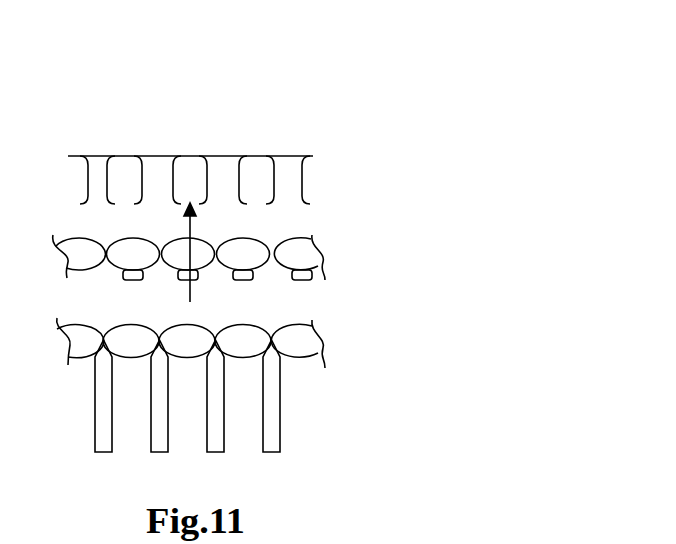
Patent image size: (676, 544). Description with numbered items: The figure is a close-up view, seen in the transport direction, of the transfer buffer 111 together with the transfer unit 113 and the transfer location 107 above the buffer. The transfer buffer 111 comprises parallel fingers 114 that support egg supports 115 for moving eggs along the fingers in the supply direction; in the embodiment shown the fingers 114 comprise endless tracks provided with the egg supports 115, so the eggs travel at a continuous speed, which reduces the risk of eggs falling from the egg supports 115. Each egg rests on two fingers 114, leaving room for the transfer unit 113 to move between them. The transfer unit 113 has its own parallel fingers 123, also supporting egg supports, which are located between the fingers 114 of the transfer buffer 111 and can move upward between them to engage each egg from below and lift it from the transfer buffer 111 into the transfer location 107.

The transfer location 107 is at (313, 218).
The transfer unit 113 is at (342, 271).
The fingers of the transfer unit 123 is at (191, 232).
The transfer buffer 111 is at (251, 382).
The egg supports 115 is at (273, 348).
The fingers of the transfer buffer 114 is at (273, 398).